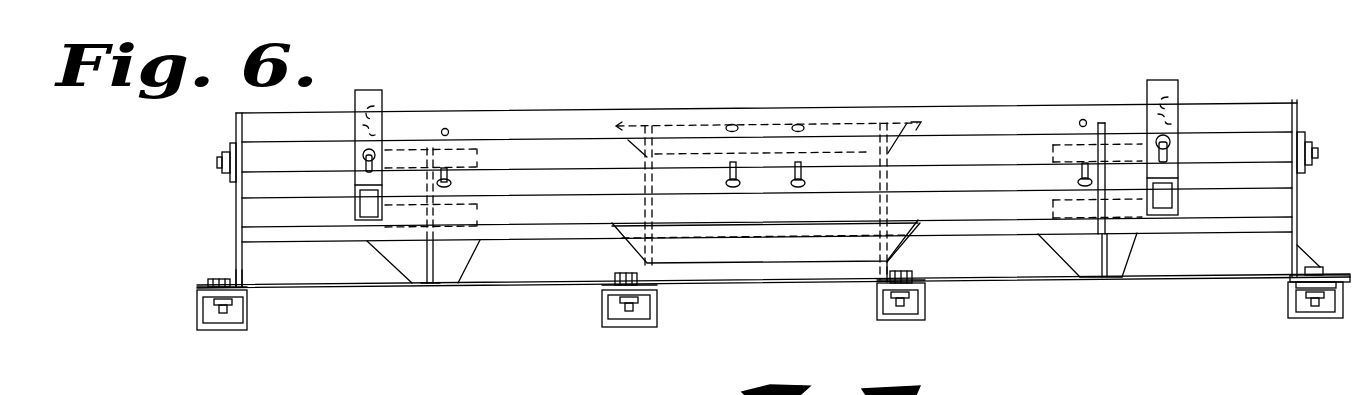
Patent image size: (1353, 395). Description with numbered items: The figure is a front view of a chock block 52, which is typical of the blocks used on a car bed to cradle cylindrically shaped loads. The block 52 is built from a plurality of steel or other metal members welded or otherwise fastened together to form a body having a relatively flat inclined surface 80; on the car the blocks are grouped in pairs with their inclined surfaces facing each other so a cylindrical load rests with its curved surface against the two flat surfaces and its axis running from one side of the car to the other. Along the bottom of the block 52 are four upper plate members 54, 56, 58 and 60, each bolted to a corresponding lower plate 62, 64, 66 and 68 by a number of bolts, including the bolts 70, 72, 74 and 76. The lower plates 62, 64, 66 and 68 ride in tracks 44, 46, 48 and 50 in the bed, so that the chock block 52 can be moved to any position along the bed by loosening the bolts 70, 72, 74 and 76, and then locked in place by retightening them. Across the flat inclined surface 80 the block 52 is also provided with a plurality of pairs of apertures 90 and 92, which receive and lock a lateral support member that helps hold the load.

The inclined surface 80 is at (248, 131).
The chock block 52 is at (378, 320).
The track 44 is at (216, 322).
The track 46 is at (638, 320).
The track 48 is at (910, 320).
The track 50 is at (1326, 318).
The upper plate member 54 is at (240, 285).
The upper plate member 56 is at (651, 280).
The upper plate member 58 is at (920, 280).
The upper plate member 60 is at (1345, 274).
The lower plate 62 is at (236, 301).
The lower plate 64 is at (650, 297).
The lower plate 66 is at (926, 303).
The lower plate 68 is at (1312, 306).
The bolt 70 is at (207, 278).
The bolt 72 is at (602, 286).
The bolt 74 is at (879, 288).
The bolt 76 is at (1292, 279).
The aperture 90 is at (738, 128).
The aperture 92 is at (740, 184).